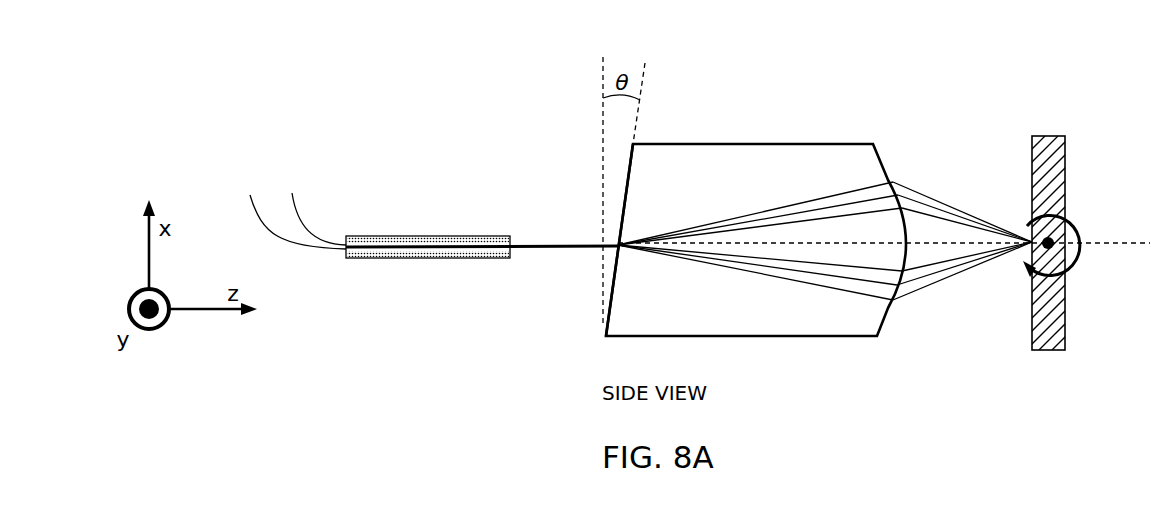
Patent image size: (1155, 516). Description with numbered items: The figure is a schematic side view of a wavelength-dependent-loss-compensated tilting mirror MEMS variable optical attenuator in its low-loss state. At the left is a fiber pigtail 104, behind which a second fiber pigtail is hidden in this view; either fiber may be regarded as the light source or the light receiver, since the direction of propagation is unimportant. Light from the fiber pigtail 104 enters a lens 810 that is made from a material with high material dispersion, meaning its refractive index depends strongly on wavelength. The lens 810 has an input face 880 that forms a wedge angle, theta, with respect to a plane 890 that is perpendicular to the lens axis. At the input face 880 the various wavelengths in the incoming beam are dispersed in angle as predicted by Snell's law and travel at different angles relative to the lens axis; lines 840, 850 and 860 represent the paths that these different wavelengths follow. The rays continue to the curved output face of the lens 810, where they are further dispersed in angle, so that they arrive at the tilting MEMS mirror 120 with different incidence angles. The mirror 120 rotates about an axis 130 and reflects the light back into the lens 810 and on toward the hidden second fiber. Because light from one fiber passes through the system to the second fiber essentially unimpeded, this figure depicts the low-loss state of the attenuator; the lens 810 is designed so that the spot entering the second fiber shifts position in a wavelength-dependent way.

The fiber pigtail 104 is at (390, 237).
The lens 810 is at (695, 155).
The plane perpendicular to the lens axis 890 is at (602, 172).
The input face 880 is at (615, 262).
The light path line 840 is at (777, 277).
The light path line 850 is at (828, 275).
The light path line 860 is at (870, 268).
The tilting MEMS mirror 120 is at (1062, 137).
The axis 130 is at (1057, 247).